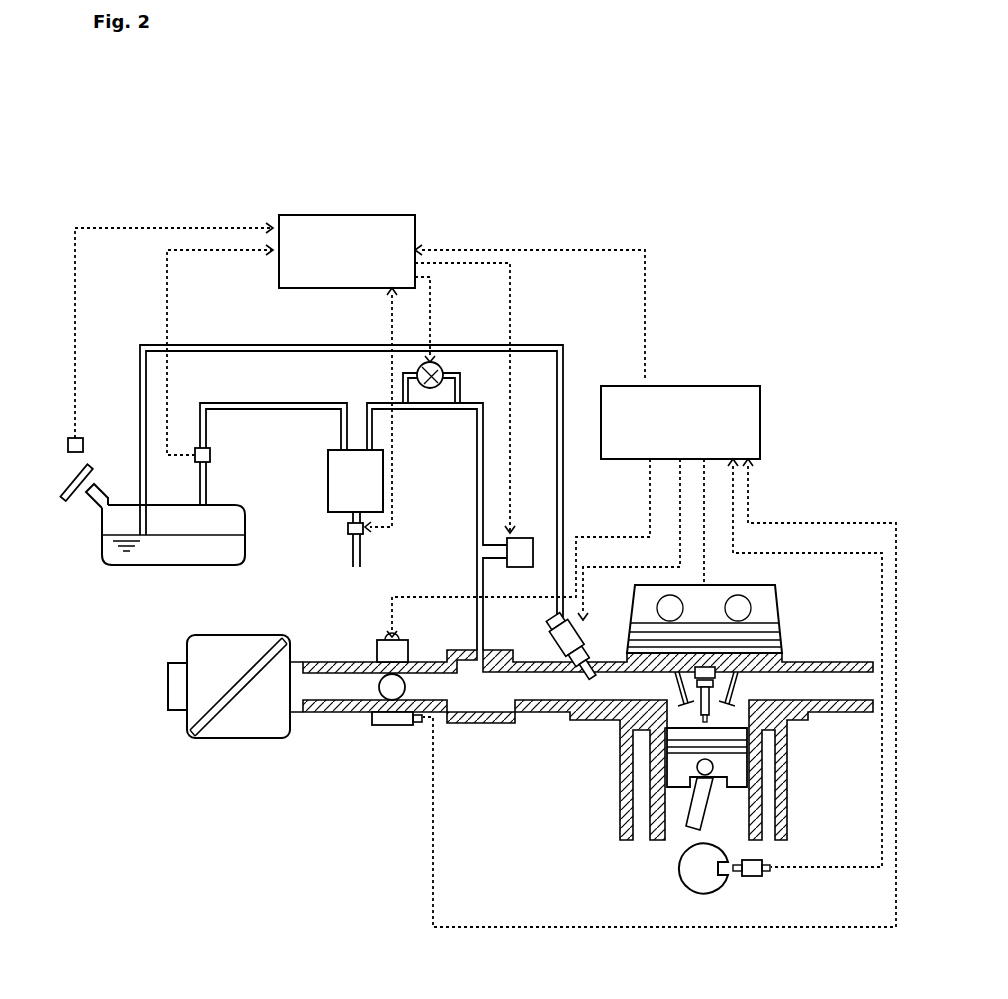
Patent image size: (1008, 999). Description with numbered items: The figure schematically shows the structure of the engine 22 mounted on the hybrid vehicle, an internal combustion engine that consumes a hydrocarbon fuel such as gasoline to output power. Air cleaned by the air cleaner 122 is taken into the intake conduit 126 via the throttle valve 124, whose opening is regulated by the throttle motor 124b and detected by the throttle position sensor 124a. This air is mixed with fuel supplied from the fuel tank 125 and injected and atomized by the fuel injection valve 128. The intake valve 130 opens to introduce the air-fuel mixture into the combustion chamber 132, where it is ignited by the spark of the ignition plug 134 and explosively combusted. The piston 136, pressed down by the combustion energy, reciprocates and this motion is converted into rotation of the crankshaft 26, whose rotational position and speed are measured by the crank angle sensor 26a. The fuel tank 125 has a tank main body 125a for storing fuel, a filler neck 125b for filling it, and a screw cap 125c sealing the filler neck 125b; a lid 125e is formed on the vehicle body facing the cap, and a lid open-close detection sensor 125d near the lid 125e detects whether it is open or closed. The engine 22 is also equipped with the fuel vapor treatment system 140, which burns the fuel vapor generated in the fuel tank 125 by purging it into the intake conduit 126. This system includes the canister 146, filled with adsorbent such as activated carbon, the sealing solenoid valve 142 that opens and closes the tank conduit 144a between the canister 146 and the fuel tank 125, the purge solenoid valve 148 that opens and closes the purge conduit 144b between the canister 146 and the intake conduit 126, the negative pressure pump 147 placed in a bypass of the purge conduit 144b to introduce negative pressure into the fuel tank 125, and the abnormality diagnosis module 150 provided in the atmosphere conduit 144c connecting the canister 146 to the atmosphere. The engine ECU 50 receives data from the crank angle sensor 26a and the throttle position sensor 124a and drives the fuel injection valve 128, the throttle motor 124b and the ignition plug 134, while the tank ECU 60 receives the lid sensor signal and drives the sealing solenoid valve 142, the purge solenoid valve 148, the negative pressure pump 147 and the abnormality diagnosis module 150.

The engine 22 is at (817, 483).
The crankshaft 26 is at (678, 868).
The crank angle sensor 26a is at (761, 878).
The engine ECU 50 is at (683, 386).
The tank ECU 60 is at (347, 215).
The air cleaner 122 is at (237, 739).
The throttle valve 124 is at (389, 687).
The throttle position sensor 124a is at (389, 727).
The throttle motor 124b is at (377, 649).
The fuel tank 125 is at (132, 511).
The tank main body 125a is at (127, 566).
The filler neck 125b is at (96, 503).
The screw cap 125c is at (93, 468).
The lid open-close detection sensor 125d is at (68, 445).
The lid 125e is at (64, 497).
The intake conduit 126 is at (517, 684).
The fuel injection valve 128 is at (551, 624).
The intake valve 130 is at (676, 701).
The combustion chamber 132 is at (624, 723).
The ignition plug 134 is at (732, 686).
The piston 136 is at (677, 768).
The fuel vapor treatment system 140 is at (351, 483).
The sealing solenoid valve 142 is at (212, 456).
The tank conduit 144a is at (219, 403).
The purge conduit 144b is at (477, 538).
The atmosphere conduit 144c is at (353, 555).
The canister 146 is at (328, 450).
The negative pressure pump 147 is at (440, 367).
The purge solenoid valve 148 is at (531, 538).
The abnormality diagnosis module 150 is at (348, 528).